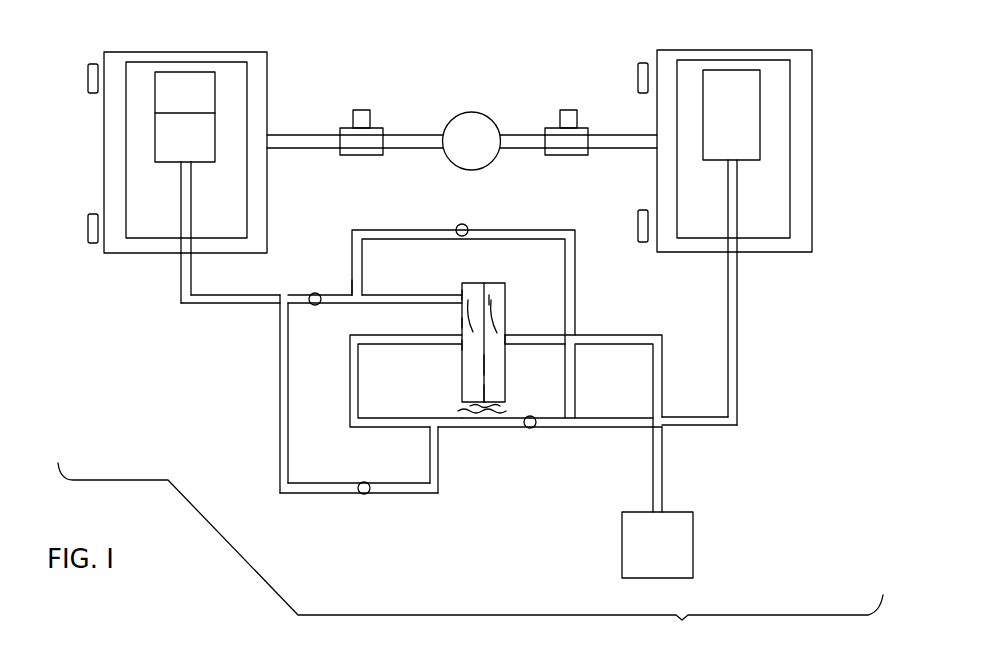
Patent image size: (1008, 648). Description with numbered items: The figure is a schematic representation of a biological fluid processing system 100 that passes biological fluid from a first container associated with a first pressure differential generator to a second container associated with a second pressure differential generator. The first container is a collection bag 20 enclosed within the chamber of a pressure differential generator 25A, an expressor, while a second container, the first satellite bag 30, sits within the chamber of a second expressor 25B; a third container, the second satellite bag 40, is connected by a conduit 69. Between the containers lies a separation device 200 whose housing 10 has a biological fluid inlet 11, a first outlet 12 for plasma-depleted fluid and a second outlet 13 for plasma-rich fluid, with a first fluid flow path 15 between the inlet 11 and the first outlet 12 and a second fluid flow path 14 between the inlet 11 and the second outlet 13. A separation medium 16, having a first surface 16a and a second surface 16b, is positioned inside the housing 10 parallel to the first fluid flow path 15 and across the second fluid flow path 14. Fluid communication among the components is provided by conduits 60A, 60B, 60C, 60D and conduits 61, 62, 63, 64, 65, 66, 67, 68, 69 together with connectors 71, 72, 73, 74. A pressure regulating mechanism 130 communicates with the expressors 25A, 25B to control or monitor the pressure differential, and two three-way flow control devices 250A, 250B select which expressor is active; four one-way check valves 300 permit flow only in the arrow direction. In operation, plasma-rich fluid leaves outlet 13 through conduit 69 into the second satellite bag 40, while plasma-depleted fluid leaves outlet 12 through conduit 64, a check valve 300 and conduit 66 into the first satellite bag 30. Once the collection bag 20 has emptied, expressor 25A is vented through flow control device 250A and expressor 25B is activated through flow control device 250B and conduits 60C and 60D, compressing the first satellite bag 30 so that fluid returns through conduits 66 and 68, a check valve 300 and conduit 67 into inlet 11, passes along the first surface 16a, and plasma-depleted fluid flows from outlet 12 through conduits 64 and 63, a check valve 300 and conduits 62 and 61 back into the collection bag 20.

The housing 10 is at (500, 392).
The biological fluid inlet 11 is at (455, 293).
The first outlet 12 is at (460, 345).
The second outlet 13 is at (508, 337).
The second fluid flow path 14 is at (490, 298).
The first fluid flow path 15 is at (477, 323).
The separation medium 16 is at (484, 283).
The first surface 16a is at (487, 380).
The second surface 16b is at (488, 368).
The collection bag 20 is at (185, 78).
The pressure differential generator 25A is at (105, 178).
The pressure differential generator 25B is at (812, 208).
The first satellite bag 30 is at (735, 78).
The second satellite bag 40 is at (693, 540).
The conduit 60A is at (330, 135).
The conduit 60B is at (408, 135).
The conduit 60C is at (524, 135).
The conduit 60D is at (628, 135).
The conduit 61 is at (222, 305).
The conduit 62 is at (280, 402).
The conduit 63 is at (406, 494).
The conduit 64 is at (350, 400).
The conduit 65 is at (453, 430).
The conduit 66 is at (625, 428).
The conduit 67 is at (400, 230).
The conduit 68 is at (577, 253).
The conduit 69 is at (660, 355).
The connector 71 is at (283, 295).
The connector 72 is at (350, 295).
The connector 73 is at (428, 430).
The connector 74 is at (572, 418).
The biological fluid processing system 100 is at (470, 555).
The pressure regulating mechanism 130 is at (465, 120).
The separation device 200 is at (482, 412).
The flow control device 250A is at (356, 156).
The flow control device 250B is at (570, 156).
The flow control device 300 is at (460, 224).